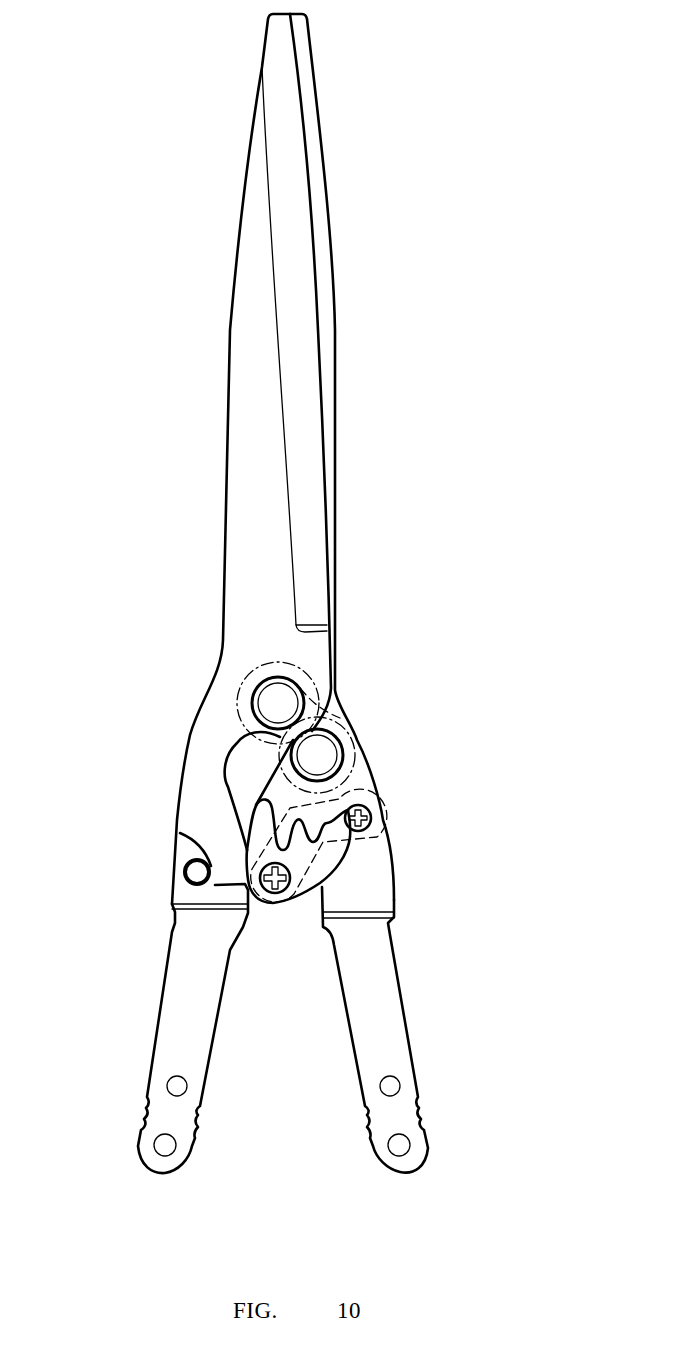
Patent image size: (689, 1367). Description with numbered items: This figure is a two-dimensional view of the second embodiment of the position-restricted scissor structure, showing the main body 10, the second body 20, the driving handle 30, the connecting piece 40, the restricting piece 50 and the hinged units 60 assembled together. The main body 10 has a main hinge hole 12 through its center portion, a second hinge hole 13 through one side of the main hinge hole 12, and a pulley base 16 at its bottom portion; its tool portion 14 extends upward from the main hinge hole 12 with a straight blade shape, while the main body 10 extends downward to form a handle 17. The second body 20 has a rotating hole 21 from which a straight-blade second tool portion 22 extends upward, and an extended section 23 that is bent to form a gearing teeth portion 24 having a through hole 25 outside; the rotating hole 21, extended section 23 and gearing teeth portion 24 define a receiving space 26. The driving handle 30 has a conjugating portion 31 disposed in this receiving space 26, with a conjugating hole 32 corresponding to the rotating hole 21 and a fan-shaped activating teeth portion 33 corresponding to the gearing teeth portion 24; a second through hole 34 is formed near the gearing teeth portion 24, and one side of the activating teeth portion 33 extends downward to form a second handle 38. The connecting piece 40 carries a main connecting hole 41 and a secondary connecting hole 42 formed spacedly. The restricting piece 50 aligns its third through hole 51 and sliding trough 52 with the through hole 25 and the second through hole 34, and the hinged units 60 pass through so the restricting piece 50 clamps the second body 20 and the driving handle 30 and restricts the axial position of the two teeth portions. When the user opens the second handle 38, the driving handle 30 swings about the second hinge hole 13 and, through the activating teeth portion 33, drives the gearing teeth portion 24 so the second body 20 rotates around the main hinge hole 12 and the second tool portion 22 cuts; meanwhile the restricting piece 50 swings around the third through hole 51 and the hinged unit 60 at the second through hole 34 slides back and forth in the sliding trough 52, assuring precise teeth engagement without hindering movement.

The main body 10 is at (151, 1003).
The main hinge hole 12 is at (348, 681).
The second hinge hole 13 is at (401, 752).
The tool portion 14 is at (322, 243).
The pulley base 16 is at (197, 873).
The handle 17 is at (163, 1066).
The second body 20 is at (262, 634).
The rotating hole 21 is at (348, 681).
The second tool portion 22 is at (300, 318).
The extended section 23 is at (213, 773).
The gearing teeth portion 24 is at (283, 847).
The through hole 25 is at (265, 932).
The receiving space 26 is at (263, 740).
The driving handle 30 is at (410, 1030).
The conjugating portion 31 is at (283, 821).
The conjugating hole 32 is at (401, 752).
The activating teeth portion 33 is at (257, 804).
The second through hole 34 is at (372, 818).
The second handle 38 is at (400, 1050).
The connecting piece 40 is at (339, 718).
The main connecting hole 41 is at (300, 688).
The secondary connecting hole 42 is at (348, 742).
The restricting piece 50 is at (355, 860).
The third through hole 51 is at (265, 932).
The sliding trough 52 is at (372, 853).
The hinged unit 60 is at (336, 830).